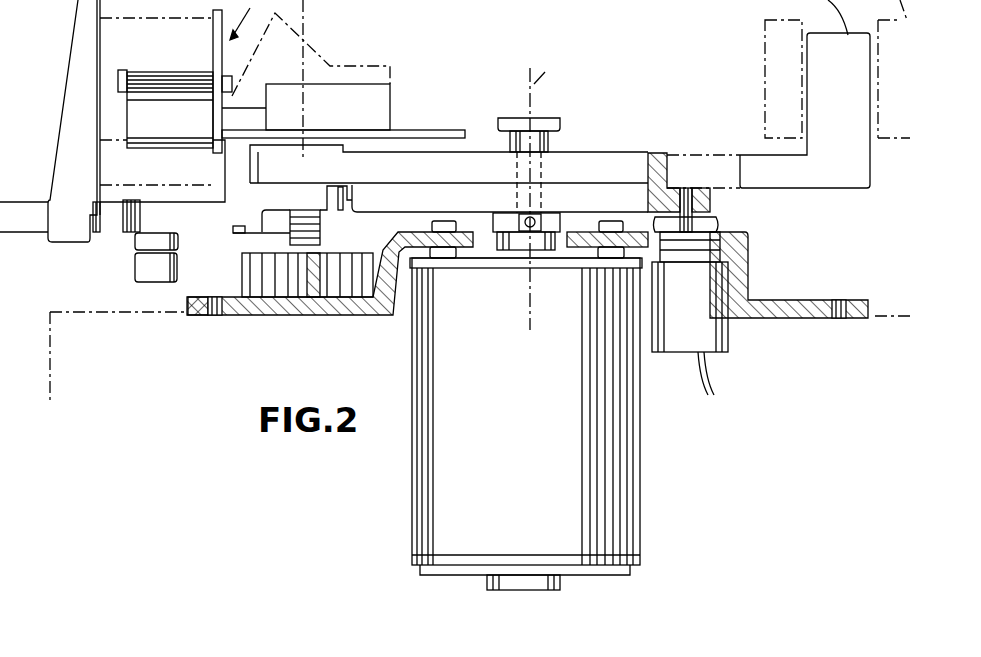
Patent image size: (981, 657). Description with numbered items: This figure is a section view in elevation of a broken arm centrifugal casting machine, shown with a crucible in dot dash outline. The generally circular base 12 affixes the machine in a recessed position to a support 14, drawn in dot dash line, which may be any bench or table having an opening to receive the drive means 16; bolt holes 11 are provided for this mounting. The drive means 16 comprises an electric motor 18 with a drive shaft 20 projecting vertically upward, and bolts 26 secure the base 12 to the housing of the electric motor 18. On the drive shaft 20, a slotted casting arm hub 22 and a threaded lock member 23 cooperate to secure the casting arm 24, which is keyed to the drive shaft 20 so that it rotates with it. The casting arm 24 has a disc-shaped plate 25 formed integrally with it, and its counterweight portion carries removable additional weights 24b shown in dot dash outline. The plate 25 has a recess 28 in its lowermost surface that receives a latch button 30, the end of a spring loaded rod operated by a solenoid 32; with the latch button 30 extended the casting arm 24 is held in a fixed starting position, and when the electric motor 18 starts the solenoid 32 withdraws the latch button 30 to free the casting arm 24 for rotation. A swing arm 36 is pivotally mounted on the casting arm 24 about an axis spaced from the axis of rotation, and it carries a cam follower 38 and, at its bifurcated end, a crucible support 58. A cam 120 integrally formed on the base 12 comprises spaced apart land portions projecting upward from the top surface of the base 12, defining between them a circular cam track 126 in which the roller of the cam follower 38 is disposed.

The bolt holes 11 is at (215, 302).
The base 12 is at (752, 237).
The support 14 is at (135, 317).
The drive means 16 is at (402, 357).
The electric motor 18 is at (540, 422).
The drive shaft 20 is at (545, 170).
The casting arm hub 22 is at (560, 215).
The threaded lock member 23 is at (505, 118).
The casting arm 24 is at (625, 146).
The removable additional weights 24b is at (765, 72).
The disc-shaped plate 25 is at (403, 183).
The bolts 26 is at (443, 220).
The recess 28 is at (686, 190).
The latch button 30 is at (712, 204).
The solenoid 32 is at (686, 345).
The swing arm 36 is at (226, 172).
The cam follower 38 is at (128, 261).
The crucible support 58 is at (398, 106).
The cam 120 is at (328, 266).
The cam track 126 is at (283, 283).